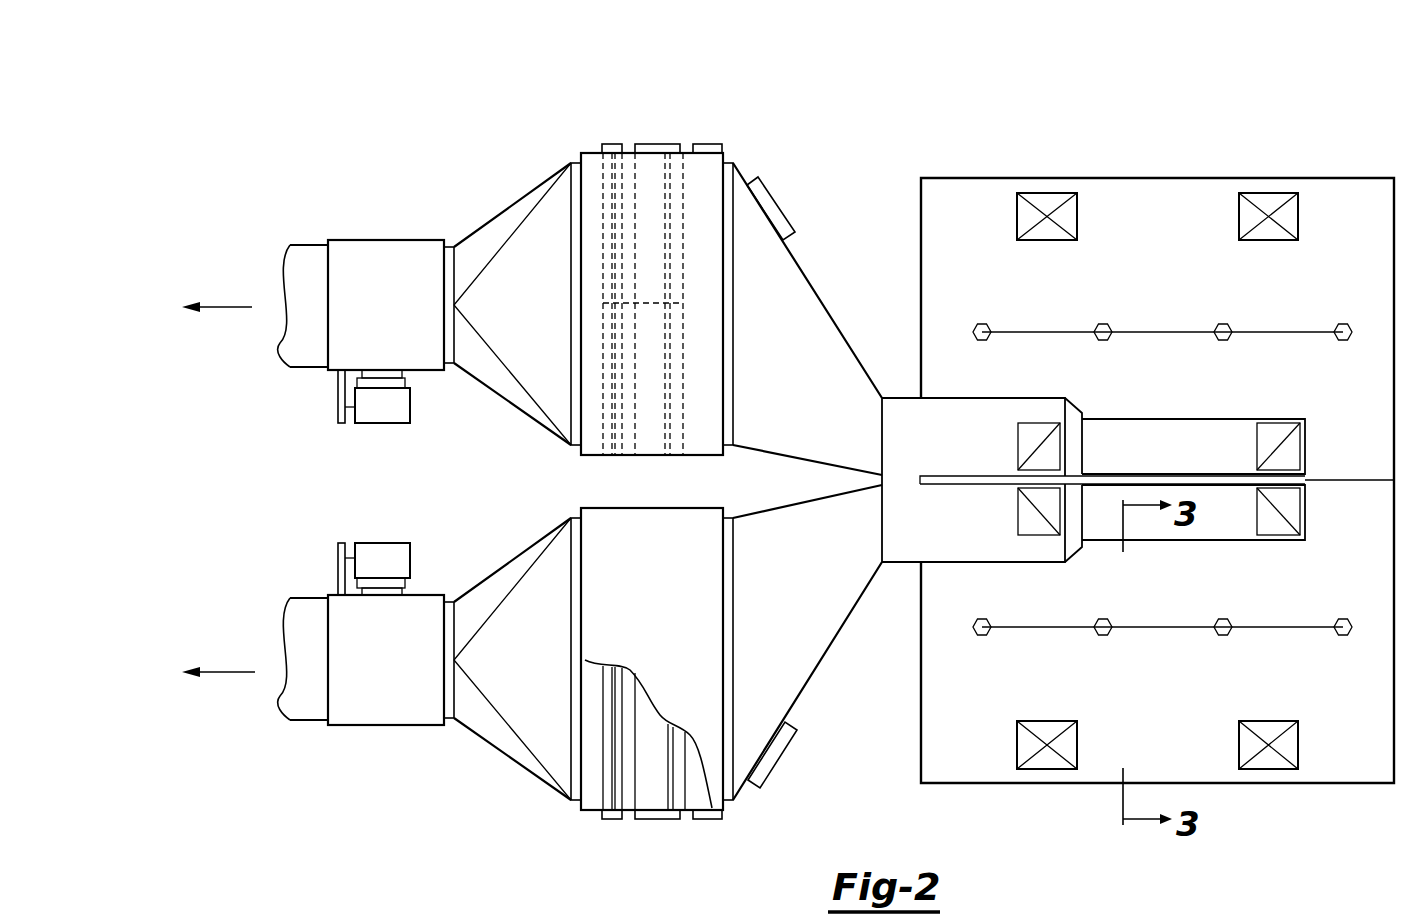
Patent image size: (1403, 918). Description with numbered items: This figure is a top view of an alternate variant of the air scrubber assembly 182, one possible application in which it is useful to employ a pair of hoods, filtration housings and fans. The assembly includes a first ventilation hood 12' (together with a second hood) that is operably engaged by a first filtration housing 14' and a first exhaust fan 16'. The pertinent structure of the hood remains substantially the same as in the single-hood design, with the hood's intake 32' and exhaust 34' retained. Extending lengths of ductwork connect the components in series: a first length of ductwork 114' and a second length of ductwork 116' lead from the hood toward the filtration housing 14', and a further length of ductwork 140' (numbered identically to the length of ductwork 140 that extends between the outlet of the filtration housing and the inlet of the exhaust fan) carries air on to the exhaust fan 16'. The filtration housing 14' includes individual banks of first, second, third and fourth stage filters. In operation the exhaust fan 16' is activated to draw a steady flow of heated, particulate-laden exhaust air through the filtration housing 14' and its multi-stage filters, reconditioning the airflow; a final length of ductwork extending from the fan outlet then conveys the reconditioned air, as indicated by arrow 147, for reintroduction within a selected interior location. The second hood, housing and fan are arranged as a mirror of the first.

The air scrubber assembly 182 is at (860, 136).
The first filtration housing 14' is at (645, 696).
The third length of ductwork 140' is at (517, 289).
The second length of ductwork 140 is at (517, 681).
The first exhaust fan 16' is at (391, 692).
The arrow 147 is at (232, 305).
The second length of ductwork 116' is at (821, 642).
The first length of ductwork 114' is at (1093, 559).
The exhaust 34' is at (1193, 538).
The intake 32' is at (1167, 787).
The first ventilation hood 12' is at (1157, 672).